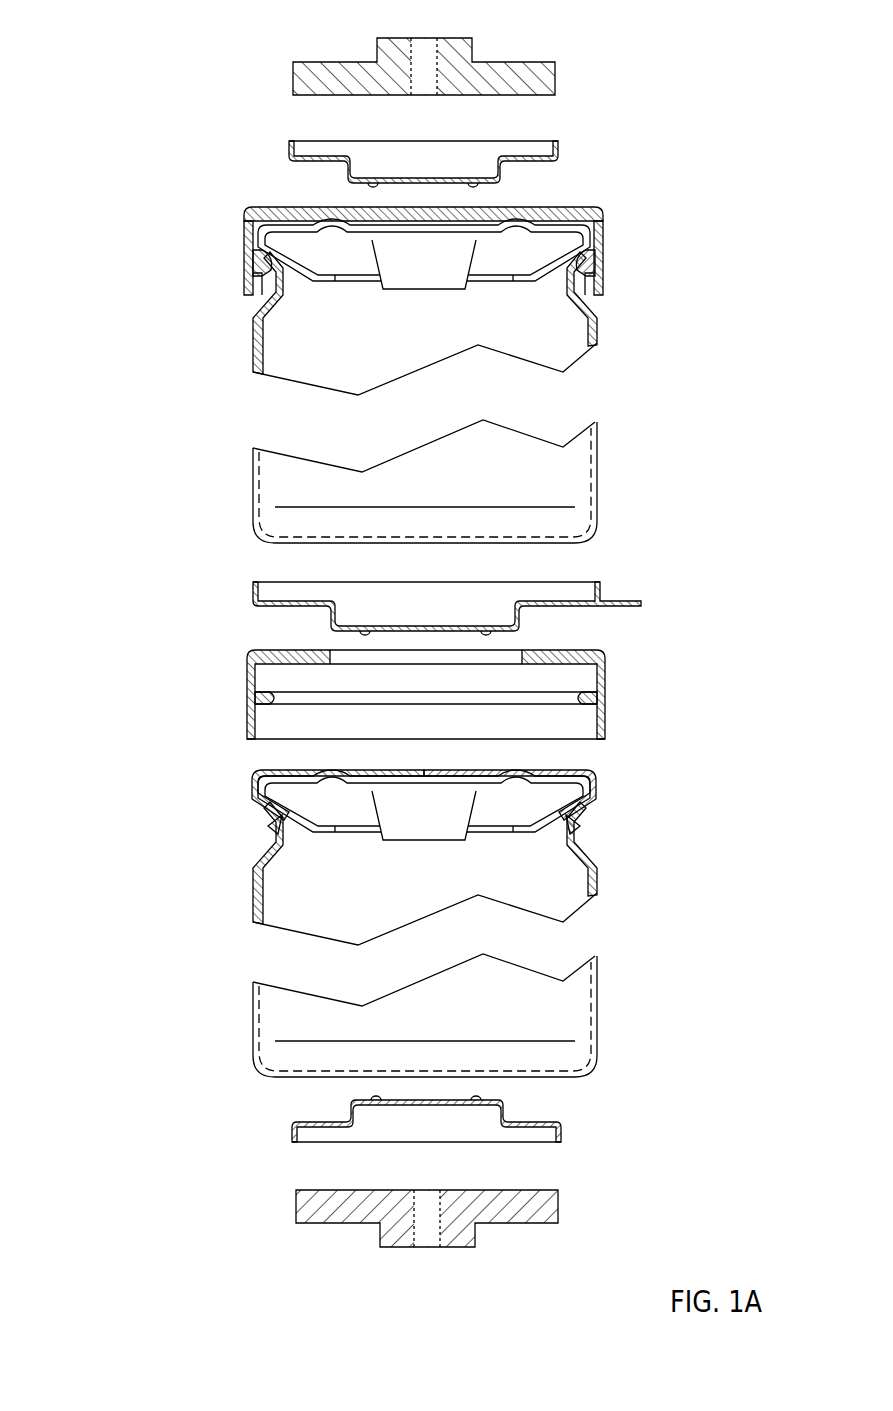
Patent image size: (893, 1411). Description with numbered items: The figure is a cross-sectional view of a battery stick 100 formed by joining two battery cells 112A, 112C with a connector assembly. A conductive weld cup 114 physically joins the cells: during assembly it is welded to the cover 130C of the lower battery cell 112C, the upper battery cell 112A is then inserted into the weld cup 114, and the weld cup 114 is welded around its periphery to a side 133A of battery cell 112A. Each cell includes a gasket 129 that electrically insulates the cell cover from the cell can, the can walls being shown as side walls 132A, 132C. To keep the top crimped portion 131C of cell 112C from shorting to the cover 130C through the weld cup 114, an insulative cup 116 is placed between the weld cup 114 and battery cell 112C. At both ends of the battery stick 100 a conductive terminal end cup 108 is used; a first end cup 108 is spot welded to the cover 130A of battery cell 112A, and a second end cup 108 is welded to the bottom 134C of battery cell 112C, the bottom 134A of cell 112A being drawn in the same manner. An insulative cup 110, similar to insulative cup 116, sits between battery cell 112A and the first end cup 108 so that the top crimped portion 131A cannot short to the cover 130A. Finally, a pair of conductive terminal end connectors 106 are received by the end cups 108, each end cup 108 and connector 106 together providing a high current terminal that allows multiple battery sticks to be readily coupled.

The battery stick 100 is at (110, 116).
The conductive battery stick terminal end connector 106 is at (318, 62).
The conductive terminal end cup 108 is at (288, 152).
The insulative cup 110 is at (446, 251).
The battery cell 112A is at (429, 323).
The battery cell 112C is at (406, 873).
The conductive weld cup 114 is at (252, 592).
The insulative cup 116 is at (245, 692).
The gasket 129 is at (604, 275).
The cover 130A is at (447, 247).
The cover 130C is at (393, 793).
The top crimped portion 131A is at (607, 222).
The top crimped portion 131C is at (578, 766).
The side wall of can A 132A is at (600, 320).
The side wall of can C 132C is at (598, 880).
The side 133A is at (380, 497).
The bottom of can A 134A is at (275, 543).
The bottom 134C is at (312, 1078).